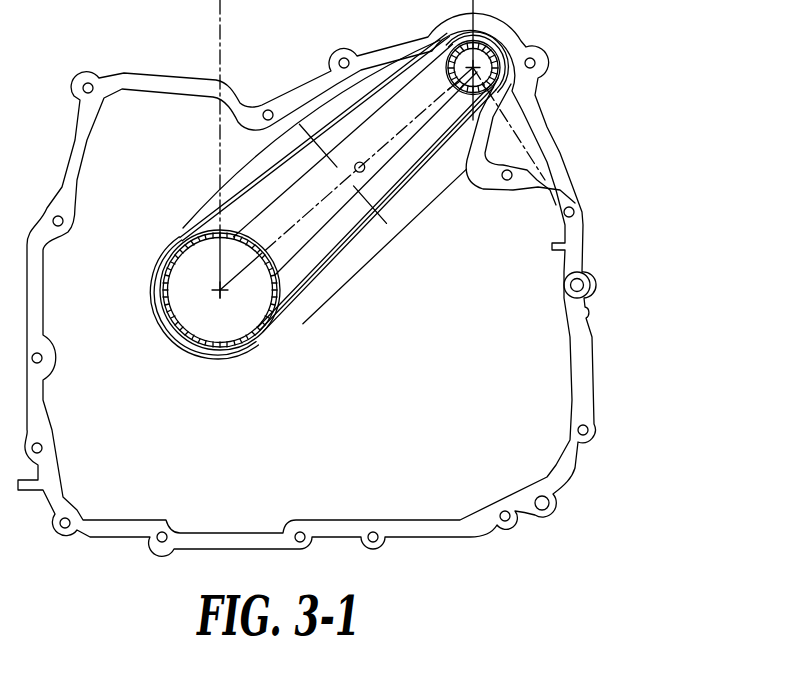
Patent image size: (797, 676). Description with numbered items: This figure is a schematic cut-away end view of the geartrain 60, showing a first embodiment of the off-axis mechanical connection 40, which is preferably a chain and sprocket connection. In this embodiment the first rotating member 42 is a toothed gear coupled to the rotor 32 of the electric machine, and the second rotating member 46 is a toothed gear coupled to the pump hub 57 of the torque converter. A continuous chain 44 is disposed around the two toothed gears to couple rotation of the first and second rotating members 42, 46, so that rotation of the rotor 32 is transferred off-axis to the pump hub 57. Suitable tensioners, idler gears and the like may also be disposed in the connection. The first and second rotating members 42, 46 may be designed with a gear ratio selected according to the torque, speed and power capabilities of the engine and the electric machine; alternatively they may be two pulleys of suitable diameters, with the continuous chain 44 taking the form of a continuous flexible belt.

The geartrain 60 is at (586, 331).
The off-axis mechanical connection 40 is at (382, 212).
The continuous chain 44 is at (332, 297).
The second rotating member 46 is at (265, 333).
The pump hub 57 is at (218, 292).
The rotor 32 is at (497, 79).
The first rotating member 42 is at (476, 70).